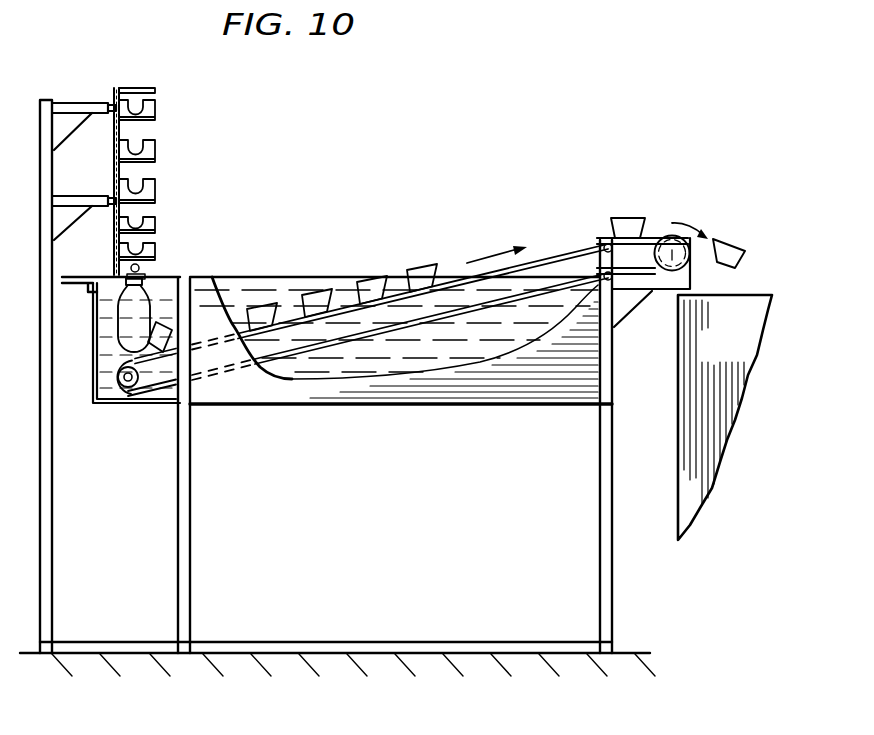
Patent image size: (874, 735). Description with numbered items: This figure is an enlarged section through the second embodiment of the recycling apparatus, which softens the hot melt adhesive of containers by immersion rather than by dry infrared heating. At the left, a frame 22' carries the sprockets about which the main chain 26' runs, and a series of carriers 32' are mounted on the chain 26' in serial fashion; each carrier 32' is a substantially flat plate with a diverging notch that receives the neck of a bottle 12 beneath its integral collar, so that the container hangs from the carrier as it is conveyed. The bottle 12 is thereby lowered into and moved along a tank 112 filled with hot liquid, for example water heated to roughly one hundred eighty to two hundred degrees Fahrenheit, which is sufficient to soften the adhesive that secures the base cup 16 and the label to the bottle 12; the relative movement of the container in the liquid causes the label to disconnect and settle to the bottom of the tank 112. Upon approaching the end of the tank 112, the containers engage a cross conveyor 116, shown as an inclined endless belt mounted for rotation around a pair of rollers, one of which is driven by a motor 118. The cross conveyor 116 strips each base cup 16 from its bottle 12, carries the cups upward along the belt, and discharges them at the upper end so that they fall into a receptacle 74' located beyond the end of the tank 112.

The frame 22' is at (80, 136).
The chain 26' is at (102, 183).
The carriers 32' is at (173, 172).
The bottle 12 is at (152, 320).
The tank 112 is at (103, 402).
The cross conveyor 116 is at (576, 243).
The base cup 16 is at (723, 240).
The motor 118 is at (672, 262).
The receptacle 74' is at (725, 417).